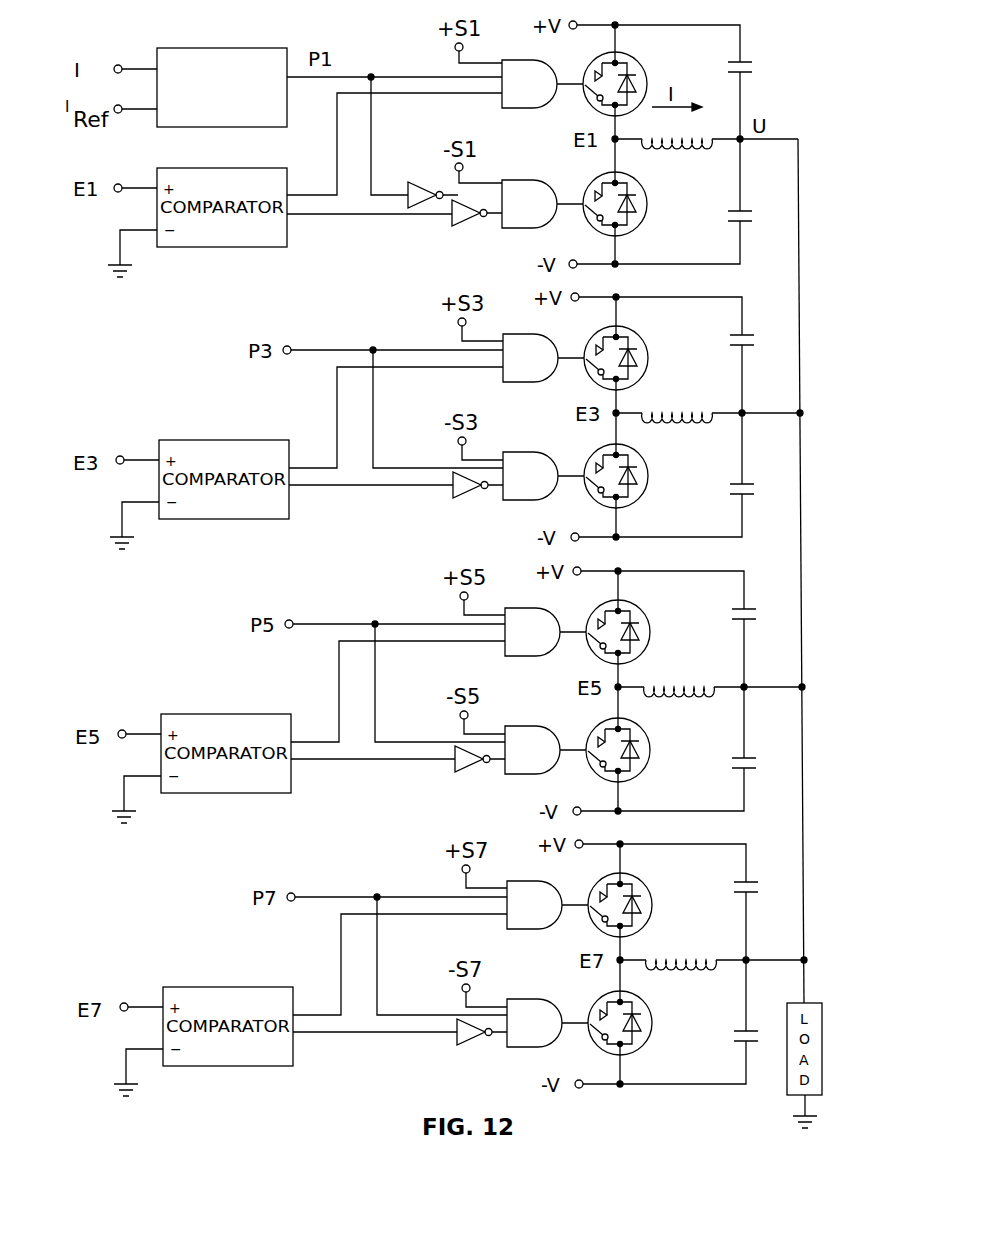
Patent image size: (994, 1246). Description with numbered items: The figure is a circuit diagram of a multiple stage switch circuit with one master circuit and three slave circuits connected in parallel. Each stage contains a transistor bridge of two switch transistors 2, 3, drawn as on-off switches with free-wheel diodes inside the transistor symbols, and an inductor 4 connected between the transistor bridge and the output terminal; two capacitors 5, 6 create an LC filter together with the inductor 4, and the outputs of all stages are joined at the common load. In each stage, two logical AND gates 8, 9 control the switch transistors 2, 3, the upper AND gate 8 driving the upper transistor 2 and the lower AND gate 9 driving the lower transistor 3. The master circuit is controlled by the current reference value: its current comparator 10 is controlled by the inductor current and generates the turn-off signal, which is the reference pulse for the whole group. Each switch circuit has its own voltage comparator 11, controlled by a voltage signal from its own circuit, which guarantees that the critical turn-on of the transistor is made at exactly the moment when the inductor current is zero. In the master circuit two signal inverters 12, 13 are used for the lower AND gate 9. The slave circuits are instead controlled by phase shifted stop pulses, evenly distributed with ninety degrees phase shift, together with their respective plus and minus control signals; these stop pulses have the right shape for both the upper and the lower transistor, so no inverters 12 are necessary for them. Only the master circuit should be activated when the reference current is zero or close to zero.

The switch transistor 2 is at (647, 82).
The switch transistor 3 is at (648, 208).
The inductor 4 is at (684, 136).
The capacitor 5 is at (756, 67).
The capacitor 6 is at (756, 217).
The AND gate 8 is at (527, 59).
The AND gate 9 is at (527, 179).
The current comparator 10 is at (205, 47).
The voltage comparator 11 is at (205, 167).
The signal inverter 12 is at (423, 184).
The signal inverter 13 is at (466, 223).